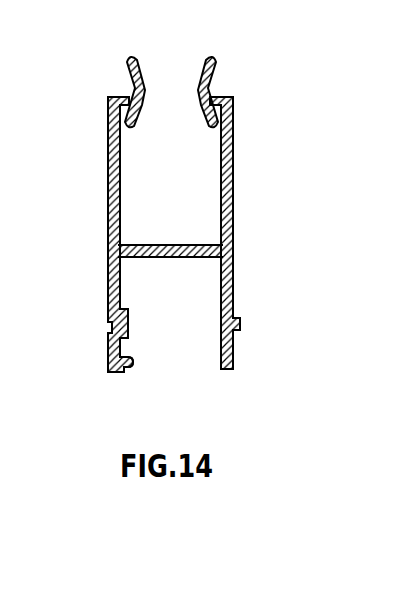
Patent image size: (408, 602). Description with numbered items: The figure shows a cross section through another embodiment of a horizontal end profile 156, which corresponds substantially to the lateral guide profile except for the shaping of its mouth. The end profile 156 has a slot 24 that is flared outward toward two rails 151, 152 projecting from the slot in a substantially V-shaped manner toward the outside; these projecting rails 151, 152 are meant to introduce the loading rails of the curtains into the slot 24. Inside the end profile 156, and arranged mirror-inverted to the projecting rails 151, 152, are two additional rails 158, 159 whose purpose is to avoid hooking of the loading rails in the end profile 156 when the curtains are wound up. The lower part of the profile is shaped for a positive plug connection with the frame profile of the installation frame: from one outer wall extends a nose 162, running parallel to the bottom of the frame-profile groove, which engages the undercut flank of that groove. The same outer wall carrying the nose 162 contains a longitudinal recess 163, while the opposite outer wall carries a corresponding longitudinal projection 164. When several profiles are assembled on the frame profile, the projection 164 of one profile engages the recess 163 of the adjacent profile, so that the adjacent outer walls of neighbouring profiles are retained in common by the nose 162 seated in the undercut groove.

The slot 24 is at (166, 92).
The projecting rail 151 is at (126, 65).
The projecting rail 152 is at (219, 68).
The end profile 156 is at (96, 207).
The additional rail 158 is at (126, 120).
The additional rail 159 is at (215, 121).
The nose 162 is at (121, 368).
The longitudinal recess 163 is at (112, 326).
The longitudinal projection 164 is at (241, 324).